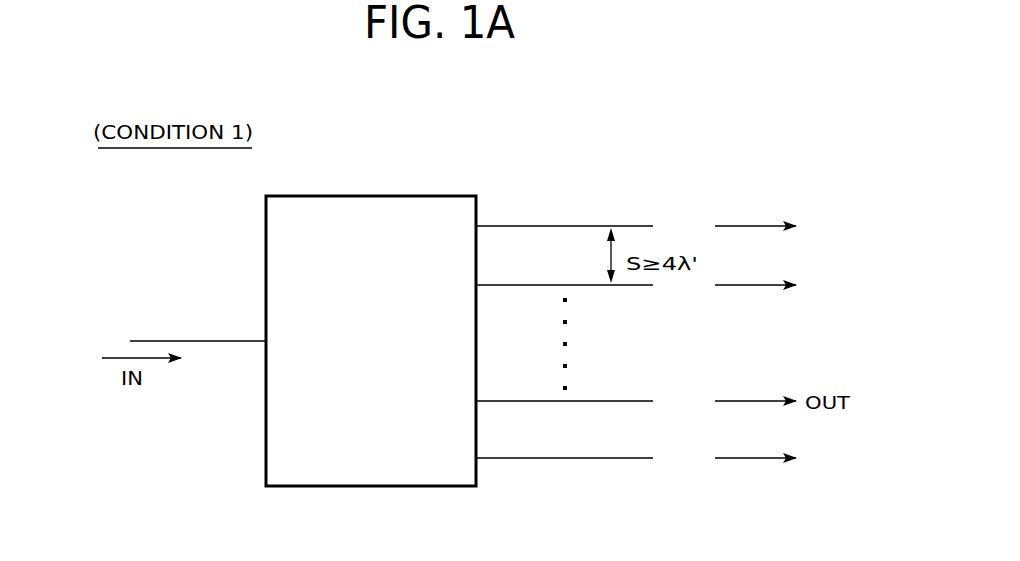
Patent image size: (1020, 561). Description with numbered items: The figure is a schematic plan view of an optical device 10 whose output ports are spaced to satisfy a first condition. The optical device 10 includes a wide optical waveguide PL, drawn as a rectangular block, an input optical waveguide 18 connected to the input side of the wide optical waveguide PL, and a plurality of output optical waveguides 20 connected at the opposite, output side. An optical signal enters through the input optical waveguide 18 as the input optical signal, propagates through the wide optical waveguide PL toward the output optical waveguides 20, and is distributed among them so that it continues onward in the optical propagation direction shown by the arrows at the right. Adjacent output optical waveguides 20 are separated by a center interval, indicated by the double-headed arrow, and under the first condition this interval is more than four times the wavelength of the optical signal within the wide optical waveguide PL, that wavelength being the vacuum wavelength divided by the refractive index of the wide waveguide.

The optical device 10 is at (486, 158).
The input optical waveguide 18 is at (196, 341).
The output optical waveguides 20 is at (637, 494).
The wide optical waveguide PL is at (313, 203).